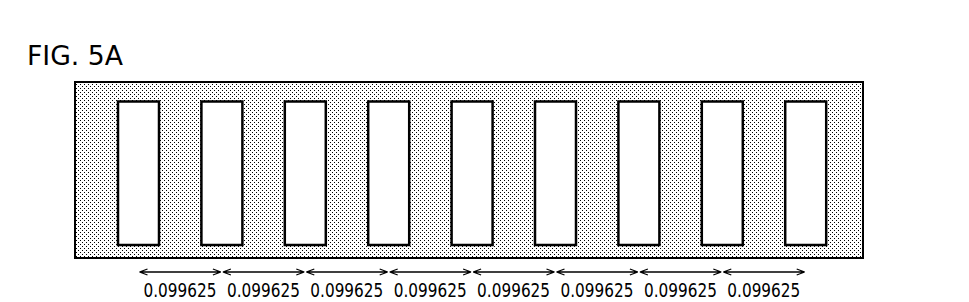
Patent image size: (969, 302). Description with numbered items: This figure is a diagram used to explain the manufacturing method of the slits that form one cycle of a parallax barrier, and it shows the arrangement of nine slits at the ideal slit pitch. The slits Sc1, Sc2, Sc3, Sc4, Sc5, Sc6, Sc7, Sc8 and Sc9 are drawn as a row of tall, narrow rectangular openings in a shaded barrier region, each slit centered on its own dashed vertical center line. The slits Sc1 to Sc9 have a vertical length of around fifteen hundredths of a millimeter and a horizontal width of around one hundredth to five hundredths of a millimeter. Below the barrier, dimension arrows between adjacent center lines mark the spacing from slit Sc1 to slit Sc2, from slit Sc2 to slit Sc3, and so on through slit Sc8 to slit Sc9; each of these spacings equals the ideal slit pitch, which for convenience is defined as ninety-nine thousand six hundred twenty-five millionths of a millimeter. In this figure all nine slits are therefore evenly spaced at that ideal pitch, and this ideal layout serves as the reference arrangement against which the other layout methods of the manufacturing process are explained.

The slit Sc1 is at (138, 298).
The slit Sc2 is at (222, 298).
The slit Sc3 is at (305, 298).
The slit Sc4 is at (389, 298).
The slit Sc5 is at (472, 298).
The slit Sc6 is at (556, 298).
The slit Sc7 is at (639, 298).
The slit Sc8 is at (722, 298).
The slit Sc9 is at (806, 298).